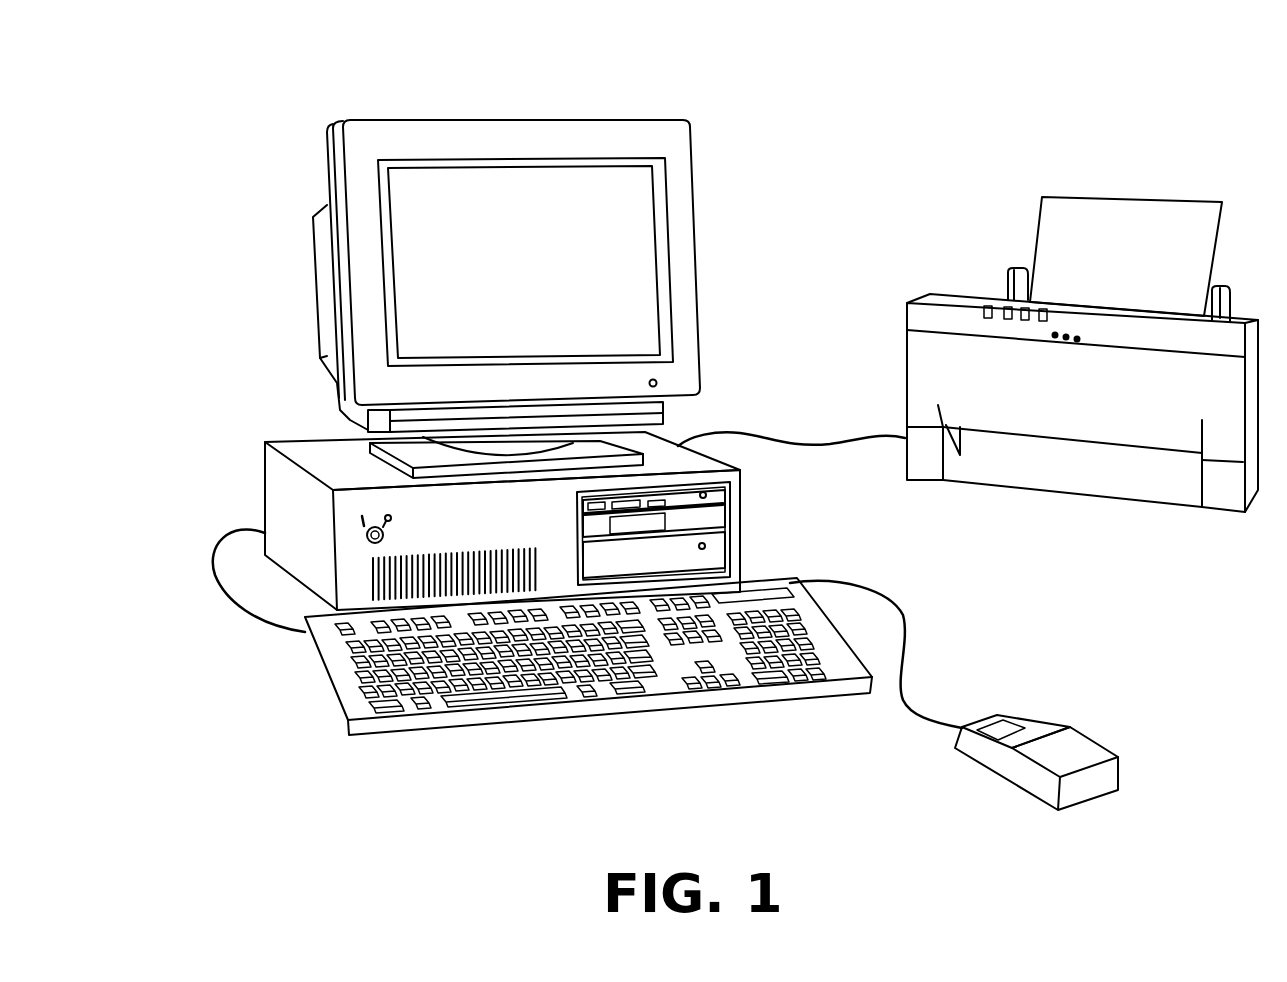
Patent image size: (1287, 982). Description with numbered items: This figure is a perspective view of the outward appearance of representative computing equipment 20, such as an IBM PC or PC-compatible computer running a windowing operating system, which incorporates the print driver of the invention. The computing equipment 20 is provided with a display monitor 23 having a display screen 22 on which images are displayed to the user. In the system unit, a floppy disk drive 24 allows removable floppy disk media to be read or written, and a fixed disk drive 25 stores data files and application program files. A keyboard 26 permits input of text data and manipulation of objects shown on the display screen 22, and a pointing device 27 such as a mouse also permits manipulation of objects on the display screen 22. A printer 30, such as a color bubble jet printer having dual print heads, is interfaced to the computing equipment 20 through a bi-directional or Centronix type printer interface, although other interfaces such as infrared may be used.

The computing equipment 20 is at (702, 107).
The display screen 22 is at (620, 285).
The display monitor 23 is at (556, 119).
The floppy disk drive 24 is at (705, 518).
The fixed disk drive 25 is at (690, 553).
The keyboard 26 is at (437, 700).
The pointing device 27 is at (1082, 803).
The printer 30 is at (1017, 185).